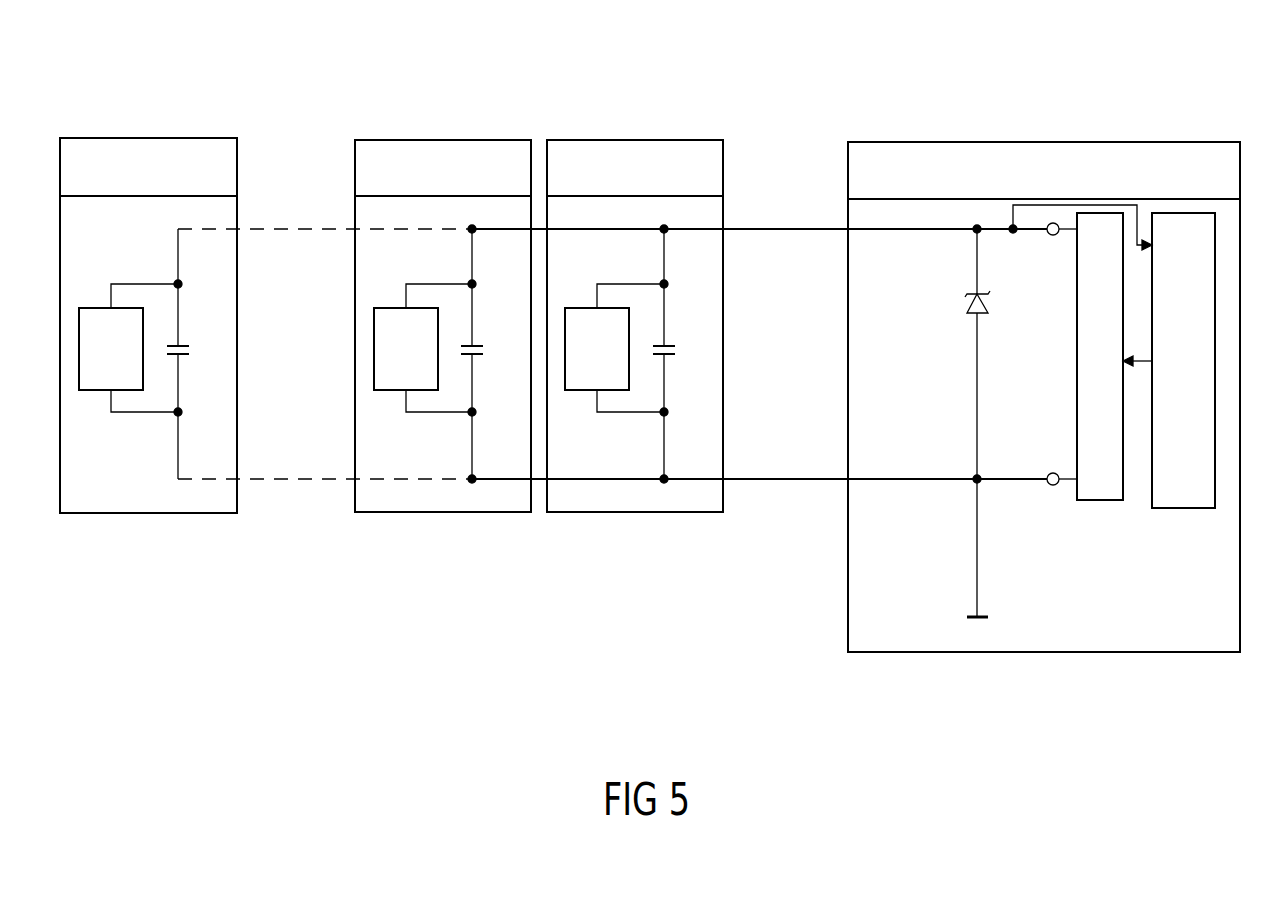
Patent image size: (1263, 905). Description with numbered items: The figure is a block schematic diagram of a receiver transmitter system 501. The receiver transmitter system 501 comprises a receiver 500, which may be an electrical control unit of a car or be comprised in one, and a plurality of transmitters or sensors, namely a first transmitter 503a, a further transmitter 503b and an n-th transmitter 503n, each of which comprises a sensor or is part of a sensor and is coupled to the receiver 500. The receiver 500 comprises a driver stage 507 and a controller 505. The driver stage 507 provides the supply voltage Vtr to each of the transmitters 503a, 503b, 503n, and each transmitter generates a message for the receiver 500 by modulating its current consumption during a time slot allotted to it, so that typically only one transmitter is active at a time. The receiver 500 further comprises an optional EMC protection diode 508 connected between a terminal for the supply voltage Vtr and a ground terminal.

The receiver transmitter system 501 is at (852, 86).
The transmitter 503n is at (120, 139).
The transmitter 503b is at (414, 140).
The first transmitter 503a is at (606, 140).
The receiver 500 is at (848, 548).
The controller 505 is at (1150, 508).
The driver stage 507 is at (1093, 500).
The EMC protection diode 508 is at (972, 311).